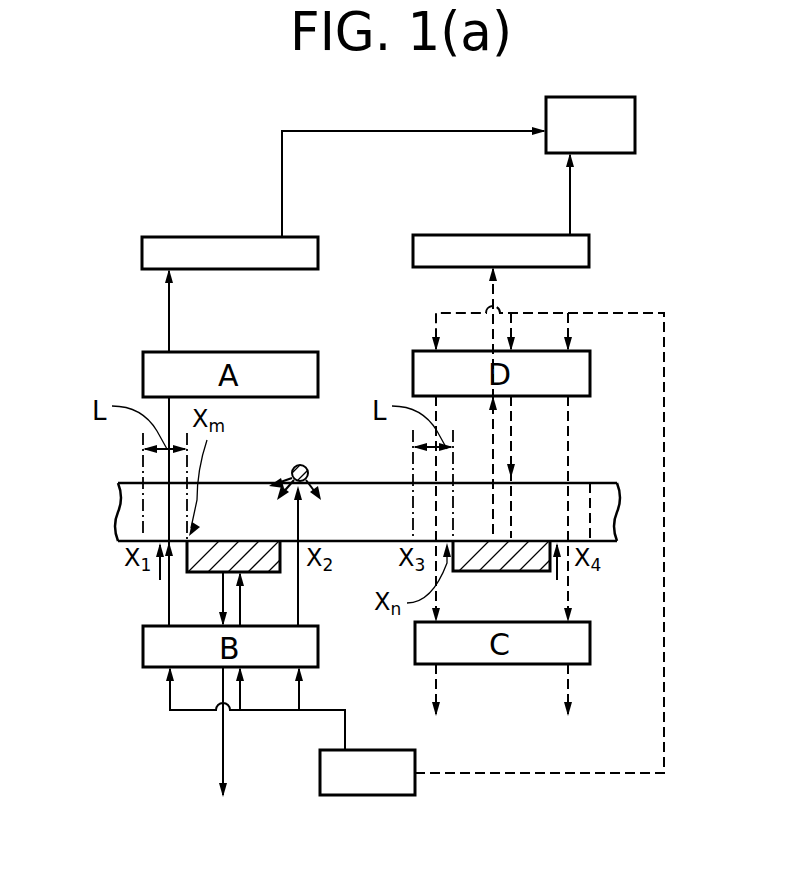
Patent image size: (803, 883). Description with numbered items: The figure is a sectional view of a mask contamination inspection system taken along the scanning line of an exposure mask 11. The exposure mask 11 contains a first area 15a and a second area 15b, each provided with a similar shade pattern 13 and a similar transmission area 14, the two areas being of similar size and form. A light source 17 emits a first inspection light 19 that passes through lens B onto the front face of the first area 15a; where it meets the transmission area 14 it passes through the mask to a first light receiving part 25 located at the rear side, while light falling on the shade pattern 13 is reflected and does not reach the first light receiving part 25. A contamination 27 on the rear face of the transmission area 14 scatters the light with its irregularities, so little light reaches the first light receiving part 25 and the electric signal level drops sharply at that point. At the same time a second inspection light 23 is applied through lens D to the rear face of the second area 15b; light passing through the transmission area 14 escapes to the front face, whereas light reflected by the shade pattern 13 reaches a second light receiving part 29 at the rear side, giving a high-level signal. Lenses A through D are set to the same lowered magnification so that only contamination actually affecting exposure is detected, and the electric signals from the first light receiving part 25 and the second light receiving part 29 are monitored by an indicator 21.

The exposure mask 11 is at (131, 515).
The shade pattern 13 is at (206, 566).
The transmission area 14 is at (160, 560).
The first area 15a is at (232, 506).
The second area 15b is at (534, 500).
The light source 17 is at (372, 796).
The first inspection light 19 is at (345, 738).
The indicator 21 is at (637, 125).
The second inspection light 23 is at (545, 772).
The first light receiving part 25 is at (215, 237).
The contamination 27 is at (315, 460).
The second light receiving part 29 is at (460, 235).